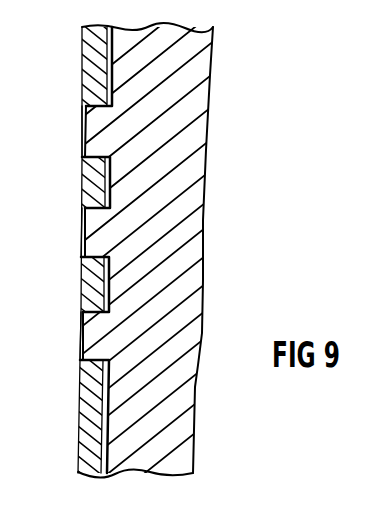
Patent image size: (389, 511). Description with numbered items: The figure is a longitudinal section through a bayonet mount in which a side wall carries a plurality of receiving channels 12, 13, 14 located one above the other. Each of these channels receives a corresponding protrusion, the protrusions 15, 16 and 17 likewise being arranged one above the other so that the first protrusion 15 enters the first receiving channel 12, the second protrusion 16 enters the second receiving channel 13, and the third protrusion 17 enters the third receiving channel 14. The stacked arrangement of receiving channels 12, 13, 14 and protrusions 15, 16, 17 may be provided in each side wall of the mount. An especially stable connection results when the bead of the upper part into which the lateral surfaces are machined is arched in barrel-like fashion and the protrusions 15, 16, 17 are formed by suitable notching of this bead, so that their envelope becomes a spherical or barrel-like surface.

The receiving channel 12 is at (87, 135).
The receiving channel 13 is at (82, 235).
The receiving channel 14 is at (83, 344).
The protrusion 15 is at (87, 120).
The protrusion 16 is at (82, 228).
The protrusion 17 is at (85, 328).